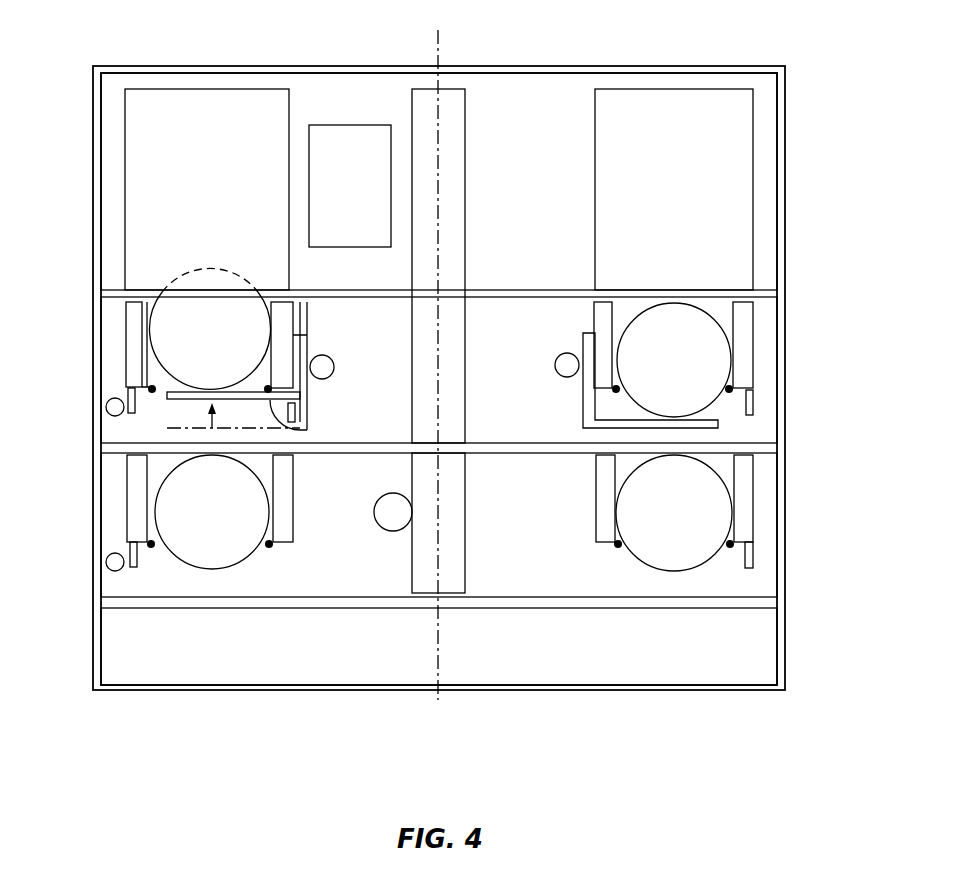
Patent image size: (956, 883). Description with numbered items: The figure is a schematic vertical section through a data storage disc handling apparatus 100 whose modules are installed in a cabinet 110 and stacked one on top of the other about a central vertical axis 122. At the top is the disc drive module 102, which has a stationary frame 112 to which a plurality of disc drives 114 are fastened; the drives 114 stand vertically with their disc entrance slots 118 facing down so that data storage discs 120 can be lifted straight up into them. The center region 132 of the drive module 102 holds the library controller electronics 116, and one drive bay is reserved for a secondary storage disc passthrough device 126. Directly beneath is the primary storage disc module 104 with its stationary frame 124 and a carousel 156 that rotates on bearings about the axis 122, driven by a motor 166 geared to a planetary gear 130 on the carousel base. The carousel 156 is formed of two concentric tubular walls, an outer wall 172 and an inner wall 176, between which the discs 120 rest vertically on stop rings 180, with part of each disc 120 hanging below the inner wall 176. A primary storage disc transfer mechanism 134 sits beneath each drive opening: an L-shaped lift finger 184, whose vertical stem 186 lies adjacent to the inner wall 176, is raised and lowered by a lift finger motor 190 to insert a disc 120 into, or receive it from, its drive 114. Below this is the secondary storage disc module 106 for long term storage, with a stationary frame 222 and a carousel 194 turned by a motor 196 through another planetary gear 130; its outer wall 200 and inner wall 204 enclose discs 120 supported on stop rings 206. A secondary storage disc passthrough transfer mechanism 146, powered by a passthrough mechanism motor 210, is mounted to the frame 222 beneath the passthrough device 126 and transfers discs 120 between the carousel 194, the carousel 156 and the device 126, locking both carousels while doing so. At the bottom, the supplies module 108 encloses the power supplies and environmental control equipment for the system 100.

The data storage disc handling apparatus 100 is at (286, 700).
The disc drive module 102 is at (568, 66).
The primary storage disc module 104 is at (790, 329).
The secondary storage disc module 106 is at (790, 500).
The supplies module 108 is at (793, 631).
The cabinet 110 is at (801, 70).
The stationary frame 112 is at (779, 150).
The disc drives 114 is at (228, 105).
The library controller electronics 116 is at (334, 135).
The disc entrance slot 118 is at (143, 290).
The data storage discs 120 is at (160, 326).
The central vertical axis 122 is at (438, 57).
The stationary frame 124 is at (778, 303).
The secondary storage disc passthrough device 126 is at (467, 195).
The planetary gear 130 is at (130, 414).
The center region 132 is at (326, 86).
The primary storage disc transfer mechanism 134 is at (303, 396).
The secondary storage disc passthrough transfer mechanism 146 is at (468, 340).
The carousel 156 is at (118, 356).
The motor 166 is at (110, 409).
The outer wall 172 is at (126, 308).
The inner wall 176 is at (284, 316).
The stop rings 180 is at (146, 388).
The lift finger 184 is at (303, 430).
The stem 186 is at (302, 345).
The lift finger motor 190 is at (325, 368).
The carousel 194 is at (118, 474).
The motor 196 is at (109, 563).
The outer wall 200 is at (127, 525).
The inner wall 204 is at (296, 472).
The stop rings 206 is at (151, 546).
The passthrough mechanism motor 210 is at (393, 520).
The stationary frame 222 is at (778, 483).